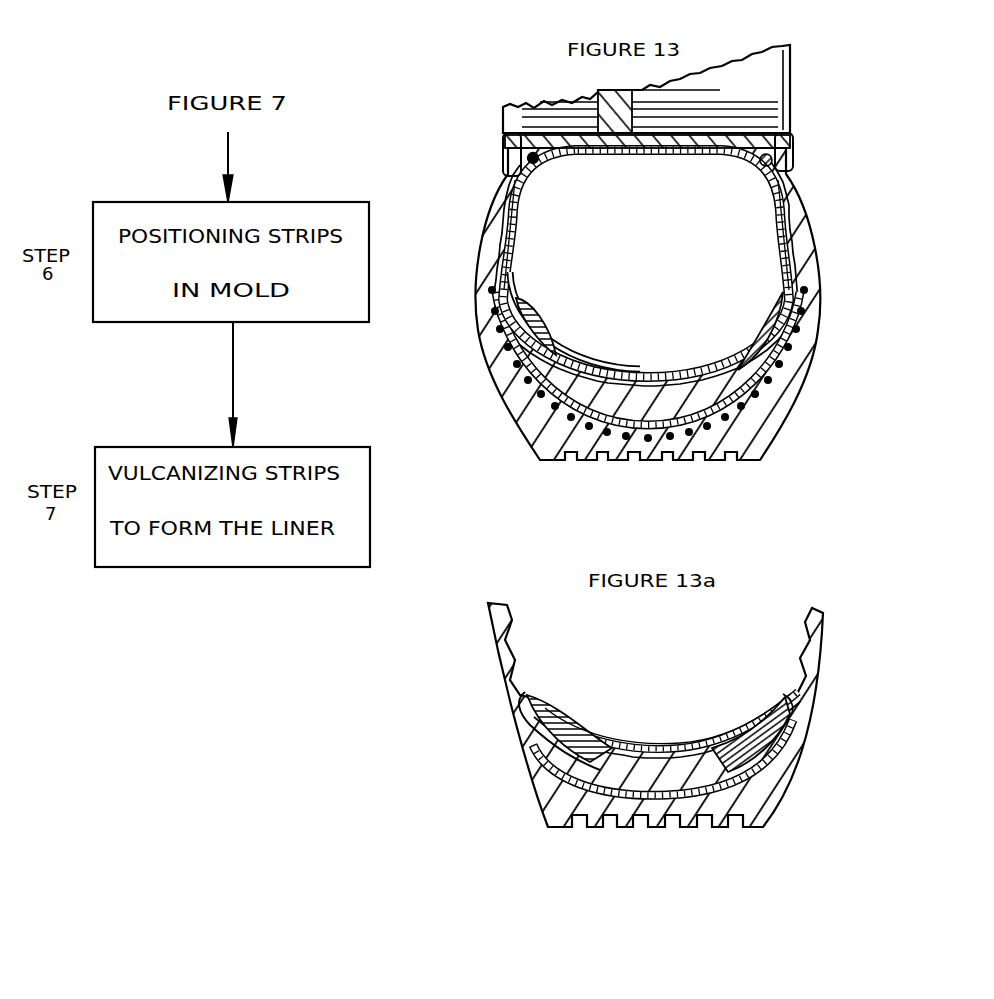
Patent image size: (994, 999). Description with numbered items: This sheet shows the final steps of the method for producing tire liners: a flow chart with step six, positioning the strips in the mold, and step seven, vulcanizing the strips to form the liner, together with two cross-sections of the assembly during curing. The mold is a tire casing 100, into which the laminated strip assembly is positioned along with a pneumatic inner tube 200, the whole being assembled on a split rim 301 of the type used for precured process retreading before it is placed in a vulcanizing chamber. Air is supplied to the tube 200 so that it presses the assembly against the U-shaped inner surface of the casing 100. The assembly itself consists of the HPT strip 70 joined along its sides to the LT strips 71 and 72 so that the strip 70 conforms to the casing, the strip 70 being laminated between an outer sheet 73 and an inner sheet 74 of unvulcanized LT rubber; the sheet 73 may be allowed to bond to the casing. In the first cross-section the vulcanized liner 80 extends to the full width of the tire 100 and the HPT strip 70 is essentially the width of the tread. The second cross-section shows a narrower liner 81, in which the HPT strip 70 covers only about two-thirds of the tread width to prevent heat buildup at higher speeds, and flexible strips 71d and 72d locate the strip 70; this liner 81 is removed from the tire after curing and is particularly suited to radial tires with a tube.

In FIG. 13, the split rim 301 is at (517, 117).
In FIG. 13, the tire casing 100 is at (513, 195).
In FIG. 13, the pneumatic inner tube 200 is at (770, 190).
In FIG. 13, the HPT strip 70 is at (717, 380).
In FIG. 13A, the HPT strip 70 is at (685, 775).
In FIG. 13, the LT strip 71 is at (550, 297).
In FIG. 13, the LT strip 72 is at (758, 310).
In FIG. 13, the sheet of unvulcanized LT rubber 73 is at (557, 393).
In FIG. 13A, the sheet of unvulcanized LT rubber 73 is at (543, 787).
In FIG. 13, the sheet of unvulcanized LT rubber 74 is at (613, 375).
In FIG. 13A, the sheet of unvulcanized LT rubber 74 is at (624, 736).
In FIG. 13, the liner 80 is at (587, 340).
In FIG. 13A, the liner 81 is at (668, 730).
In FIG. 13A, the flexible strip 71d is at (550, 710).
In FIG. 13A, the flexible strip 72d is at (780, 695).